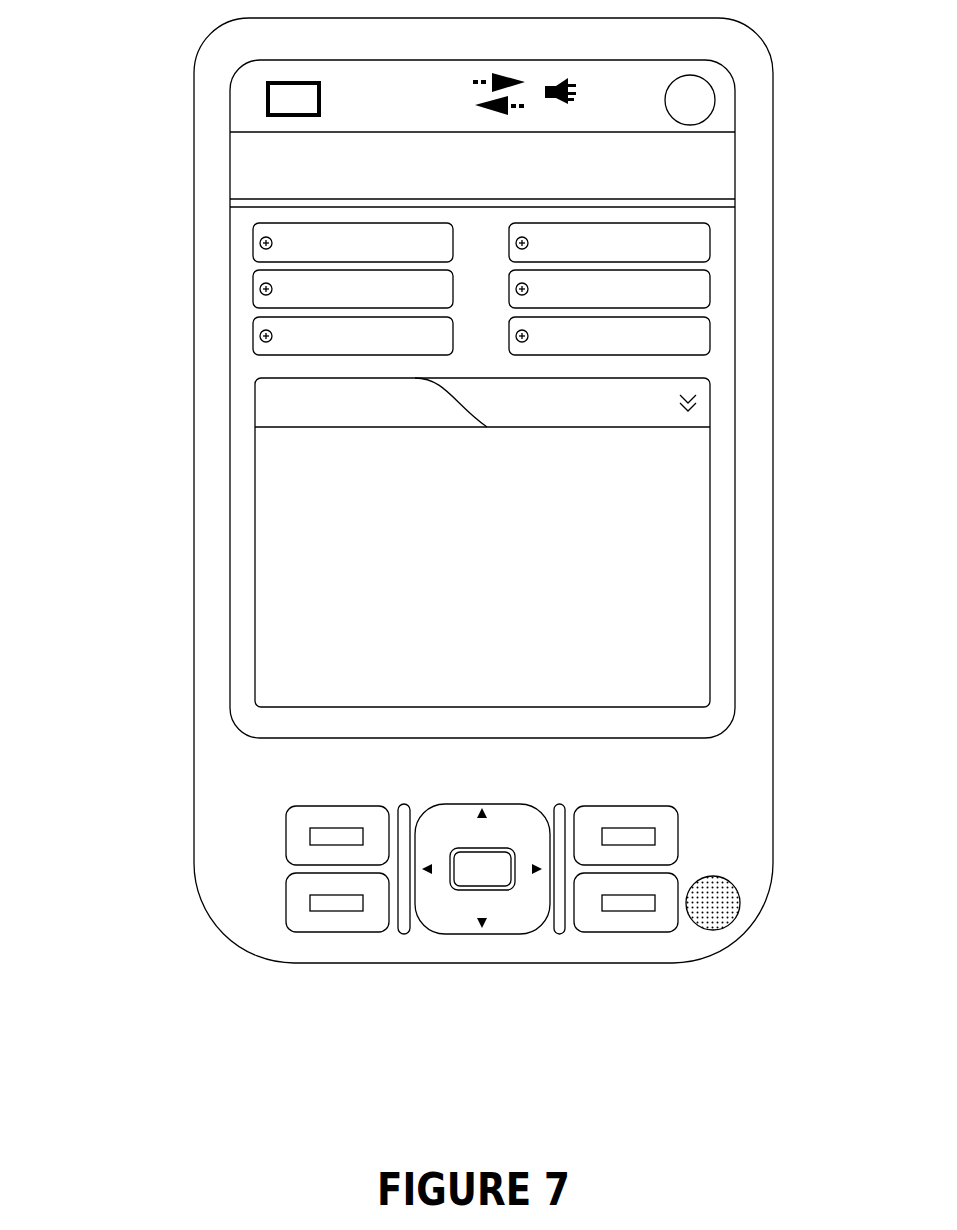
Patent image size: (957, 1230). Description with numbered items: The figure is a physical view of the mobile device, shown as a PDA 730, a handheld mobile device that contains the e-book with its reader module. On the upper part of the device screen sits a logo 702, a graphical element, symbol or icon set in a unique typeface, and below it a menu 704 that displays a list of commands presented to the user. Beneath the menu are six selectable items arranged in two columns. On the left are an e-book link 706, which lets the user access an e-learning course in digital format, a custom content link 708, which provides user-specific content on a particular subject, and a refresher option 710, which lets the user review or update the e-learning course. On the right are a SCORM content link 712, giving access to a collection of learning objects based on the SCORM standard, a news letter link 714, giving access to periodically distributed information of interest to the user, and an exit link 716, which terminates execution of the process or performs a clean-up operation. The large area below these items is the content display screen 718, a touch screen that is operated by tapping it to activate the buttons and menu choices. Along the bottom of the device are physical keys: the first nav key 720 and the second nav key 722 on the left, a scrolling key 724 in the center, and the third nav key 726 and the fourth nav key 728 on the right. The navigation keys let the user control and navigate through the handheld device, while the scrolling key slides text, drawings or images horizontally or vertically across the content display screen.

The logo 702 is at (265, 107).
The menu 704 is at (243, 168).
The e-book link 706 is at (253, 245).
The custom content link 708 is at (253, 290).
The refresher option 710 is at (253, 337).
The SCORM content link 712 is at (710, 243).
The news letter link 714 is at (710, 291).
The exit link 716 is at (710, 337).
The content display screen 718 is at (258, 555).
The nav key 1 720 is at (290, 842).
The nav key 2 722 is at (338, 926).
The scrolling key 724 is at (487, 935).
The nav key 3 726 is at (627, 926).
The nav key 4 728 is at (678, 838).
The PDA 730 is at (765, 563).